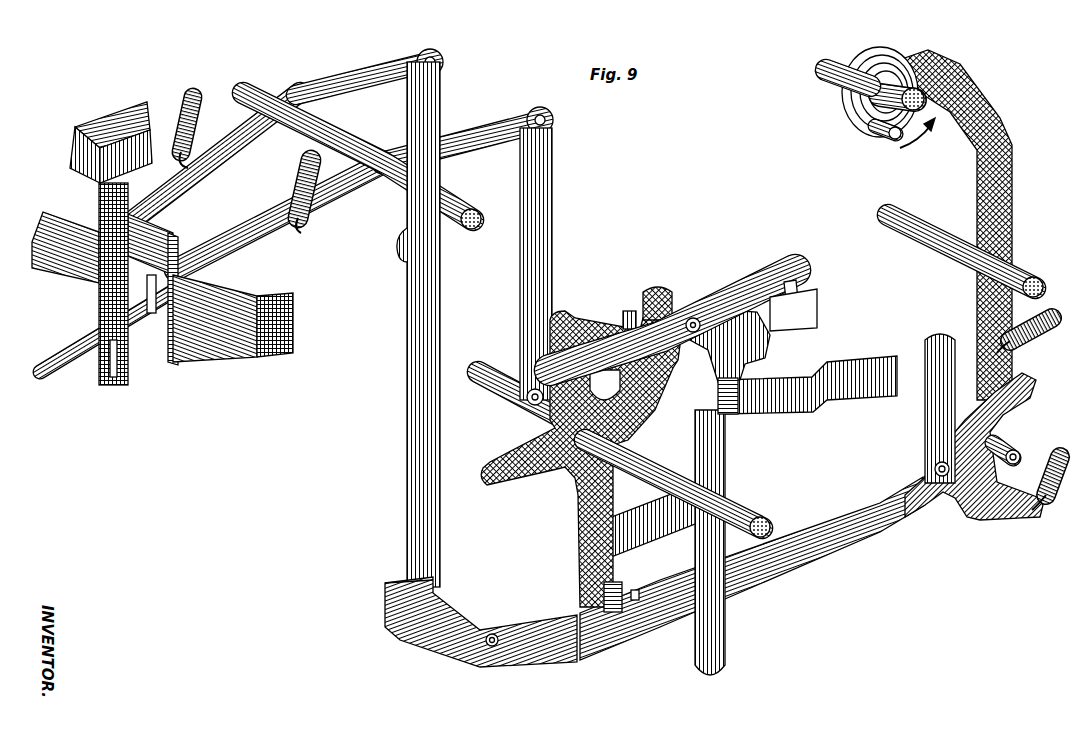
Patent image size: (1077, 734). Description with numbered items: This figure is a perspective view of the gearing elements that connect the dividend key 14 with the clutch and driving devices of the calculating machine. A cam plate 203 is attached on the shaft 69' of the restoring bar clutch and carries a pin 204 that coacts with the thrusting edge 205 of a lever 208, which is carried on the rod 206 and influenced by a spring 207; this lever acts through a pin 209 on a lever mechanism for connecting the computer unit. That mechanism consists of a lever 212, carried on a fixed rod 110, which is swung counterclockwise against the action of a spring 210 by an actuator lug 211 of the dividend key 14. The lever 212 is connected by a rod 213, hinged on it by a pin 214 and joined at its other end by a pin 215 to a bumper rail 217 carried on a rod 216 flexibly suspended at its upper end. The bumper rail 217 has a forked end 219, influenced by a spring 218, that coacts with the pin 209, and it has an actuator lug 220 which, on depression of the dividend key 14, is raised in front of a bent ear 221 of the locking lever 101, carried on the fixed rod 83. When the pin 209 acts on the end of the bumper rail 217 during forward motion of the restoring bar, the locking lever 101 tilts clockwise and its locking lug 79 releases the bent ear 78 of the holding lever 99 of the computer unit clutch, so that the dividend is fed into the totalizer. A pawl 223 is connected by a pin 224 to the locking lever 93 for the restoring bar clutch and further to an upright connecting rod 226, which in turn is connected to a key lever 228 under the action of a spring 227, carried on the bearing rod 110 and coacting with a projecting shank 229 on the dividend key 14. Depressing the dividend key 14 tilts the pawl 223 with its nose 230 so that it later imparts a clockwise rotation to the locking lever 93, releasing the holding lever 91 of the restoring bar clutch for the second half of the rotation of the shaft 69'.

The dividend key 14 is at (138, 117).
The spring 210 is at (200, 97).
The fixed rod 110 is at (257, 92).
The lever 212 is at (355, 82).
The spring 227 is at (297, 182).
The key lever 228 is at (330, 230).
The actuator lug 211 is at (62, 258).
The projecting shank 229 is at (152, 314).
The rod 213 is at (416, 353).
The upright connecting rod 226 is at (547, 217).
The bent ear 78 is at (627, 322).
The locking lug 79 is at (655, 290).
The pawl 223 is at (723, 297).
The pin 224 is at (695, 333).
The nose 230 is at (799, 290).
The stop lever 99 is at (803, 311).
The locking lever 93 is at (712, 432).
The stop lever 91 is at (843, 393).
The rod 216 is at (935, 427).
The pin 215 is at (928, 462).
The pin 209 is at (1013, 445).
The spring 218 is at (1049, 466).
The spring 207 is at (1037, 343).
The rod 206 is at (927, 223).
The lever 208 is at (983, 208).
The shaft 69' is at (841, 97).
The cam plate 203 is at (848, 128).
The pin 204 is at (884, 138).
The thrusting edge 205 is at (927, 132).
The forked end 219 is at (993, 507).
The bumper rail 217 is at (813, 558).
The fixed rod 83 is at (744, 510).
The locking lever 101 is at (557, 463).
The pin 214 is at (497, 633).
The bent ear 221 is at (606, 590).
The actuator lug 220 is at (634, 600).